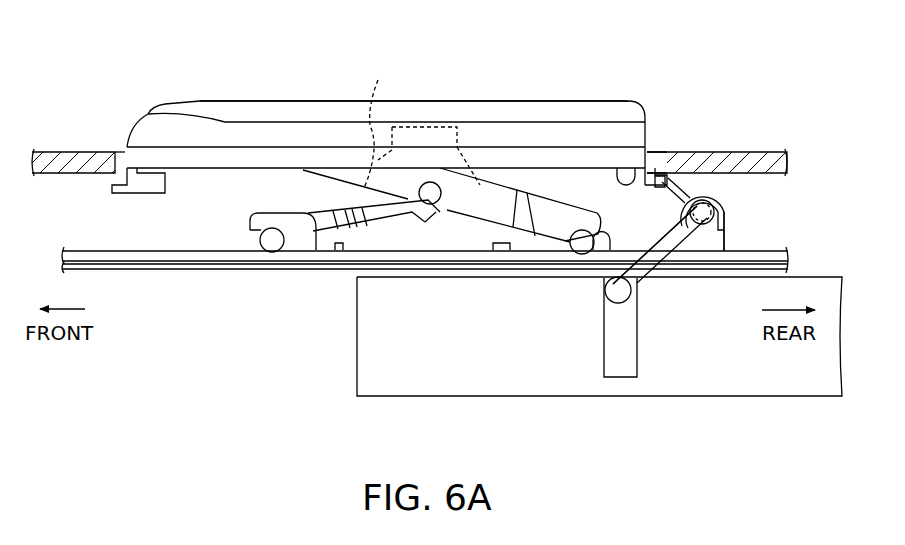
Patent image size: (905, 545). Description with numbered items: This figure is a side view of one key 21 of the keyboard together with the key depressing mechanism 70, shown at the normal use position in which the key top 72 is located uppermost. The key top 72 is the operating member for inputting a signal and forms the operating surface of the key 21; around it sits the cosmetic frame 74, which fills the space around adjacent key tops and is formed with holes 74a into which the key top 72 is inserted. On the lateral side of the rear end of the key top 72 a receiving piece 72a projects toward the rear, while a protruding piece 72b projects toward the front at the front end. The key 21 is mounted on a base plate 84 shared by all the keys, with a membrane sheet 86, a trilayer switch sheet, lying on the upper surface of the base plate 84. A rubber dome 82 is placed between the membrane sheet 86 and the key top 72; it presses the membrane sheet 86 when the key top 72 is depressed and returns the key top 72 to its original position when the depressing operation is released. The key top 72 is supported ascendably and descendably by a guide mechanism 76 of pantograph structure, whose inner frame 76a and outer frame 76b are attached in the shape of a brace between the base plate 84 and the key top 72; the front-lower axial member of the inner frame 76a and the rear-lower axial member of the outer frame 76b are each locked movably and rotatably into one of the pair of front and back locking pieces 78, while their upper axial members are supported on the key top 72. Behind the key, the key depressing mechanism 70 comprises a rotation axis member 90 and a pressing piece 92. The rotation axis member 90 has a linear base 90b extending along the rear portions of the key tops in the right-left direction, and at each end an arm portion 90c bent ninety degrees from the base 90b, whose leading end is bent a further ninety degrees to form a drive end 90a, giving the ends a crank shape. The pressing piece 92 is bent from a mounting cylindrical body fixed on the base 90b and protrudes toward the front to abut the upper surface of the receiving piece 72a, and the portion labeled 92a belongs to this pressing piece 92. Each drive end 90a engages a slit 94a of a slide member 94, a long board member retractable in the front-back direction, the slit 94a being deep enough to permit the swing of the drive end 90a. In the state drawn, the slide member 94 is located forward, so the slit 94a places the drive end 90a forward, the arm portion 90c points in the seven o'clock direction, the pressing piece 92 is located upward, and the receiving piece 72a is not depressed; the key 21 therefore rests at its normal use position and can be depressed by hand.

The key 21 is at (640, 98).
The key depressing mechanism 70 is at (749, 140).
The key top 72 is at (344, 106).
The receiving piece 72a is at (658, 173).
The protruding piece 72b is at (119, 186).
The frame 74 is at (48, 150).
The hole 74a is at (121, 146).
The guide mechanism 76 is at (425, 134).
The inner frame 76a is at (503, 195).
The outer frame 76b is at (551, 212).
The locking piece 78 is at (300, 240).
The rubber dome 82 is at (422, 123).
The base plate 84 is at (206, 266).
The membrane sheet 86 is at (159, 258).
The rotation axis member 90 is at (654, 282).
The drive end 90a is at (612, 299).
The base 90b is at (714, 211).
The arm portion 90c is at (673, 251).
The pressing piece 92 is at (707, 153).
The support wall of bracket 92a is at (725, 235).
The slide member 94 is at (802, 389).
The slit 94a is at (637, 330).